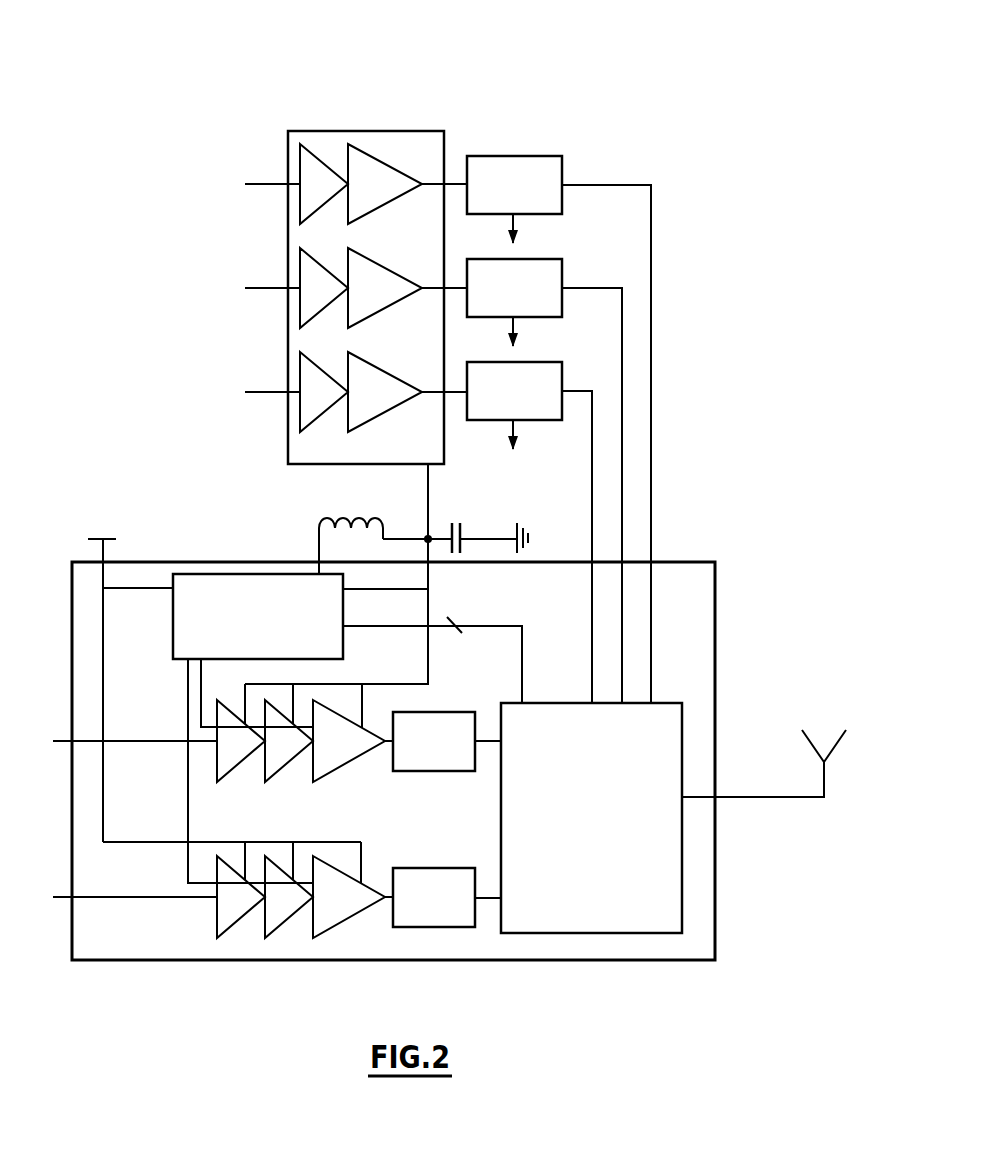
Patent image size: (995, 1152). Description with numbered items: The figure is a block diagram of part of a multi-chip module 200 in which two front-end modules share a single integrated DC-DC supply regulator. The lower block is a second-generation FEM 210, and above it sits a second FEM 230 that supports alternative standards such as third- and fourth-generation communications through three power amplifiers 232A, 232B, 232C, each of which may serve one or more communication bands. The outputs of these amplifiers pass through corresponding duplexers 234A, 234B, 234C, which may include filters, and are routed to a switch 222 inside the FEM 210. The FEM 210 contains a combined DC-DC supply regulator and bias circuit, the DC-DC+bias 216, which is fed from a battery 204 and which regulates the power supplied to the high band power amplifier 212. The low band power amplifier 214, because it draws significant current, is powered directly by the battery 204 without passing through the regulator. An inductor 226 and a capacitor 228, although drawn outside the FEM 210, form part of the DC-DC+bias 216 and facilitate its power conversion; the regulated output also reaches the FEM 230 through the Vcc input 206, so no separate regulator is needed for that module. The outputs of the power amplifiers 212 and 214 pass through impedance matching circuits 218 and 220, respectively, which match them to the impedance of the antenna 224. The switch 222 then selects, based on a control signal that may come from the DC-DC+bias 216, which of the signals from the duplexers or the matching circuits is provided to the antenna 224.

The multi-chip module 200 is at (200, 75).
The battery 204 is at (102, 508).
The Vcc input 206 is at (421, 466).
The FEM 210 is at (193, 558).
The power amplifier 212 is at (228, 789).
The power amplifier 214 is at (213, 913).
The DC-DC+bias 216 is at (172, 638).
The impedance matching circuit 218 is at (453, 712).
The impedance matching circuit 220 is at (432, 930).
The switch 222 is at (672, 692).
The antenna 224 is at (808, 812).
The inductor 226 is at (315, 510).
The capacitor 228 is at (465, 527).
The FEM 230 is at (376, 122).
The power amplifier 232A is at (299, 213).
The power amplifier 232B is at (299, 316).
The power amplifier 232C is at (299, 419).
The duplexer 234A is at (566, 172).
The duplexer 234B is at (566, 276).
The duplexer 234C is at (566, 379).